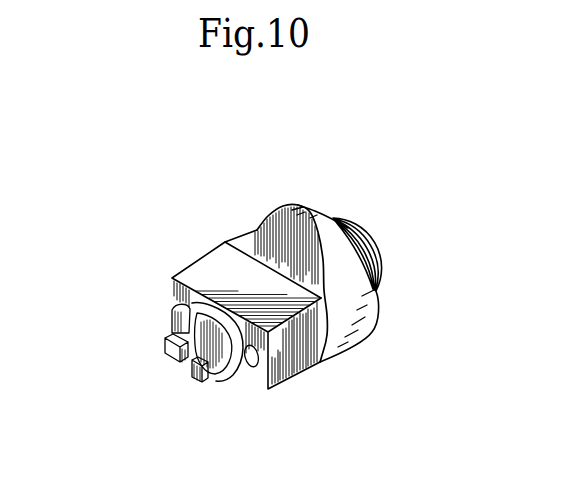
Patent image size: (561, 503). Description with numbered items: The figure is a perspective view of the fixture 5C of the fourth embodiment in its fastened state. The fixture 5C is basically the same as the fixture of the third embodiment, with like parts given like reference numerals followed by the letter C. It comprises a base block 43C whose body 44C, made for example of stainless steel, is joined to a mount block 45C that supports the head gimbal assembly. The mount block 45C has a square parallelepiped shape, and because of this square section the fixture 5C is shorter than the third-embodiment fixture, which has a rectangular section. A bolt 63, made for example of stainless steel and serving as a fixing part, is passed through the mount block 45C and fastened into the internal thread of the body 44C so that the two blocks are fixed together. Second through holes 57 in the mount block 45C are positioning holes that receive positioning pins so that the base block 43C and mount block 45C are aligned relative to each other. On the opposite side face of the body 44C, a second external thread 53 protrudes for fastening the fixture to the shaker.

The fixture 5C is at (262, 193).
The base block 43C is at (247, 217).
The body 44C is at (316, 214).
The mount block 45C is at (177, 255).
The second external thread 53 is at (380, 232).
The second through holes 57 is at (172, 310).
The bolt 63 is at (160, 358).